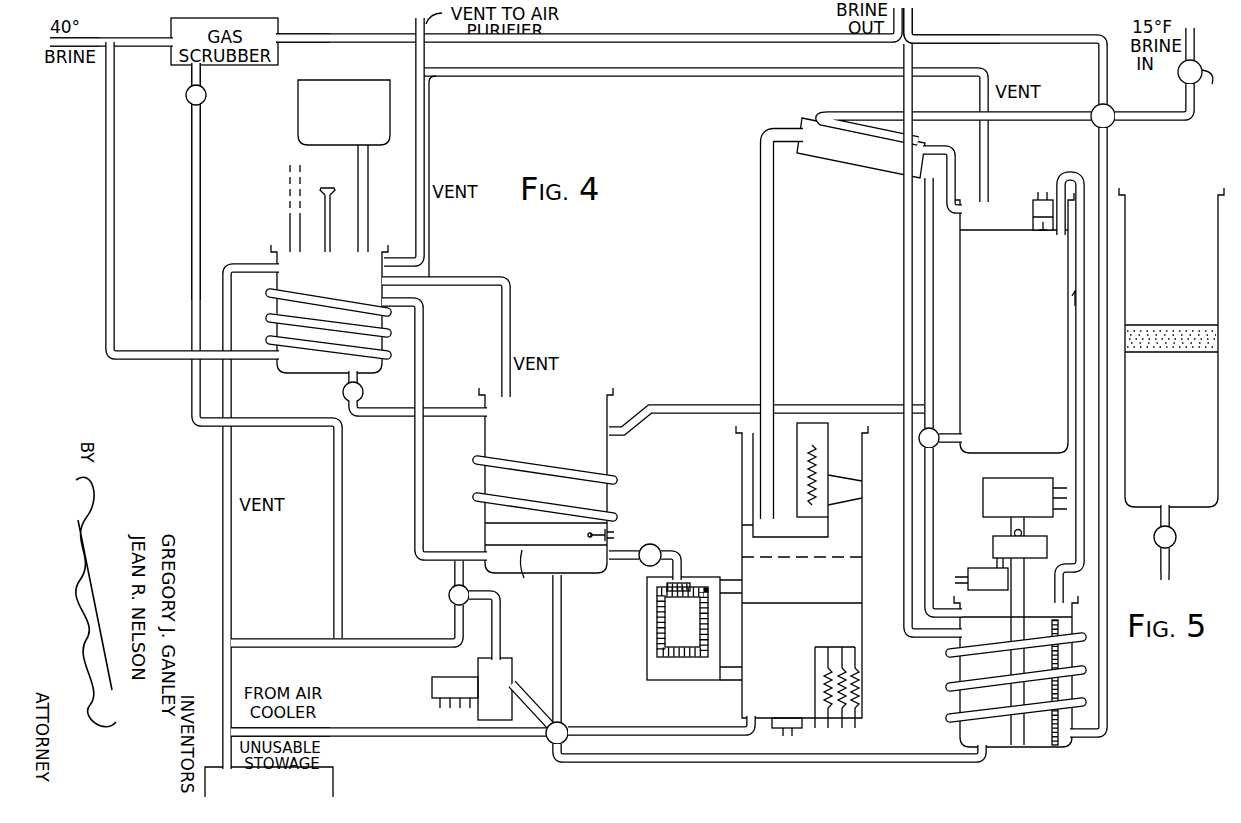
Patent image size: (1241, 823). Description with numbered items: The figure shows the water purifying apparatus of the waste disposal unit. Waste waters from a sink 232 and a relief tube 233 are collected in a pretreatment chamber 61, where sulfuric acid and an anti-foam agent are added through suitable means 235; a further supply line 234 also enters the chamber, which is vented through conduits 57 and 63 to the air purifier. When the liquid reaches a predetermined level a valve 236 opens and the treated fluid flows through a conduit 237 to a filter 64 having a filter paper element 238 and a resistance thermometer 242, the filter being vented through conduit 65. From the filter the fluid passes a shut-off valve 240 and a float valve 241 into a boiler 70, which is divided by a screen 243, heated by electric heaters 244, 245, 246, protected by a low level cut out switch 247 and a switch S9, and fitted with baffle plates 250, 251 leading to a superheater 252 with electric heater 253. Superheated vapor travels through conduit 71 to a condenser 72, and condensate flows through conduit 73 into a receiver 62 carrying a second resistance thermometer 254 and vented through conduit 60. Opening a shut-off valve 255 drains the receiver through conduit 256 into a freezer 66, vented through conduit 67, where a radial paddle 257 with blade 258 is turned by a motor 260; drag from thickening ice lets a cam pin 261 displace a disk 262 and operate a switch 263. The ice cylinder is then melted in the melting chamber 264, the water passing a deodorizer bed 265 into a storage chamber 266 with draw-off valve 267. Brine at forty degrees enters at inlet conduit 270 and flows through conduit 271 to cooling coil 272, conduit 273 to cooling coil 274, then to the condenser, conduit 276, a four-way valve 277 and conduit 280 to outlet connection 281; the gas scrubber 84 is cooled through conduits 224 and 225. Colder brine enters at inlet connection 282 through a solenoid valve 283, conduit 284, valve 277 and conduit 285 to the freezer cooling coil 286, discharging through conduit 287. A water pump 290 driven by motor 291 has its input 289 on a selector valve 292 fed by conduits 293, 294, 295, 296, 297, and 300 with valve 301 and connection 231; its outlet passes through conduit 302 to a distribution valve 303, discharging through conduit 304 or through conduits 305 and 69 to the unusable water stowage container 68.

In FIG. 4, the inlet conduit 270 is at (99, 41).
In FIG. 4, the conduit 224 is at (136, 48).
In FIG. 4, the gas scrubber 84 is at (287, 35).
In FIG. 4, the conduit 225 is at (340, 45).
In FIG. 4, the conduit 63 is at (415, 27).
In FIG. 4, the conduit 57 is at (430, 161).
In FIG. 4, the conduit 60 is at (989, 153).
In FIG. 4, the connection 231 is at (203, 81).
In FIG. 4, the valve 301 is at (206, 100).
In FIG. 4, the sink 232 is at (344, 112).
In FIG. 4, the relief tube 233 is at (290, 214).
In FIG. 4, the supply pipe 234 is at (369, 195).
In FIG. 4, the means for adding chemicals 235 is at (328, 190).
In FIG. 4, the pretreatment chamber 61 is at (320, 283).
In FIG. 4, the cooling coil 272 is at (388, 360).
In FIG. 4, the conduit 65 is at (502, 331).
In FIG. 4, the conduit 273 is at (424, 358).
In FIG. 4, the conduit 69 is at (231, 670).
In FIG. 4, the valve 236 is at (343, 393).
In FIG. 4, the conduit 237 is at (393, 418).
In FIG. 4, the conduit 271 is at (106, 187).
In FIG. 4, the filter 64 is at (530, 443).
In FIG. 4, the cooling coil 274 is at (614, 482).
In FIG. 4, the resistance thermometer 242 is at (613, 538).
In FIG. 4, the shut-off valve 240 is at (663, 552).
In FIG. 4, the filter paper element 238 is at (528, 575).
In FIG. 4, the conduit 304 is at (454, 579).
In FIG. 4, the distribution valve 303 is at (448, 597).
In FIG. 4, the conduit 302 is at (501, 633).
In FIG. 4, the water pump 290 is at (511, 662).
In FIG. 4, the pump input 289 is at (529, 691).
In FIG. 4, the conduit 293 is at (563, 631).
In FIG. 4, the motor 291 is at (432, 685).
In FIG. 4, the conduit 300 is at (330, 611).
In FIG. 4, the conduit 305 is at (363, 640).
In FIG. 4, the selector valve 292 is at (567, 722).
In FIG. 4, the conduit 294 is at (626, 727).
In FIG. 4, the conduit 296 is at (468, 739).
In FIG. 4, the conduit 297 is at (318, 738).
In FIG. 4, the conduit 295 is at (613, 764).
In FIG. 4, the unusable water stowage container 68 is at (334, 772).
In FIG. 4, the float valve 241 is at (694, 628).
In FIG. 4, the boiler 70 is at (782, 591).
In FIG. 4, the screen 243 is at (862, 560).
In FIG. 4, the electric heater 244 is at (825, 674).
In FIG. 4, the electric heater 245 is at (858, 674).
In FIG. 4, the electric heater 246 is at (860, 697).
In FIG. 4, the low level cut out switch 247 is at (796, 732).
In FIG. 4, the switch S9 is at (787, 712).
In FIG. 4, the superheater 252 is at (790, 485).
In FIG. 4, the electric heater 253 is at (818, 447).
In FIG. 4, the baffle plate 251 is at (862, 477).
In FIG. 4, the baffle plate 250 is at (862, 505).
In FIG. 4, the conduit 287 is at (903, 591).
In FIG. 4, the cooling coil 286 is at (949, 722).
In FIG. 4, the freezer 66 is at (975, 743).
In FIG. 4, the radial paddle 257 is at (1046, 740).
In FIG. 4, the blade 258 is at (1058, 746).
In FIG. 4, the shut-off valve 255 is at (938, 448).
In FIG. 4, the conduit 256 is at (937, 513).
In FIG. 4, the motor 260 is at (1040, 479).
In FIG. 4, the cam pin 261 is at (1024, 533).
In FIG. 4, the disk 262 is at (993, 543).
In FIG. 4, the switch 263 is at (986, 569).
In FIG. 4, the resistance thermometer 254 is at (1041, 198).
In FIG. 4, the conduit 67 is at (1071, 176).
In FIG. 4, the receiver 62 is at (1002, 355).
In FIG. 4, the conduit 73 is at (951, 170).
In FIG. 4, the conduit 71 is at (774, 331).
In FIG. 4, the condenser 72 is at (845, 165).
In FIG. 4, the conduit 276 is at (920, 112).
In FIG. 4, the outlet connection 281 is at (915, 26).
In FIG. 4, the conduit 280 is at (1100, 113).
In FIG. 4, the inlet connection 282 is at (1196, 62).
In FIG. 4, the solenoid valve 283 is at (1215, 89).
In FIG. 4, the conduit 284 is at (1173, 122).
In FIG. 4, the four-way valve 277 is at (1112, 125).
In FIG. 4, the conduit 285 is at (1108, 176).
In FIG. 5, the melting chamber 264 is at (1171, 347).
In FIG. 5, the deodorizer bed 265 is at (1171, 338).
In FIG. 5, the storage chamber 266 is at (1170, 406).
In FIG. 5, the valve 267 is at (1154, 539).